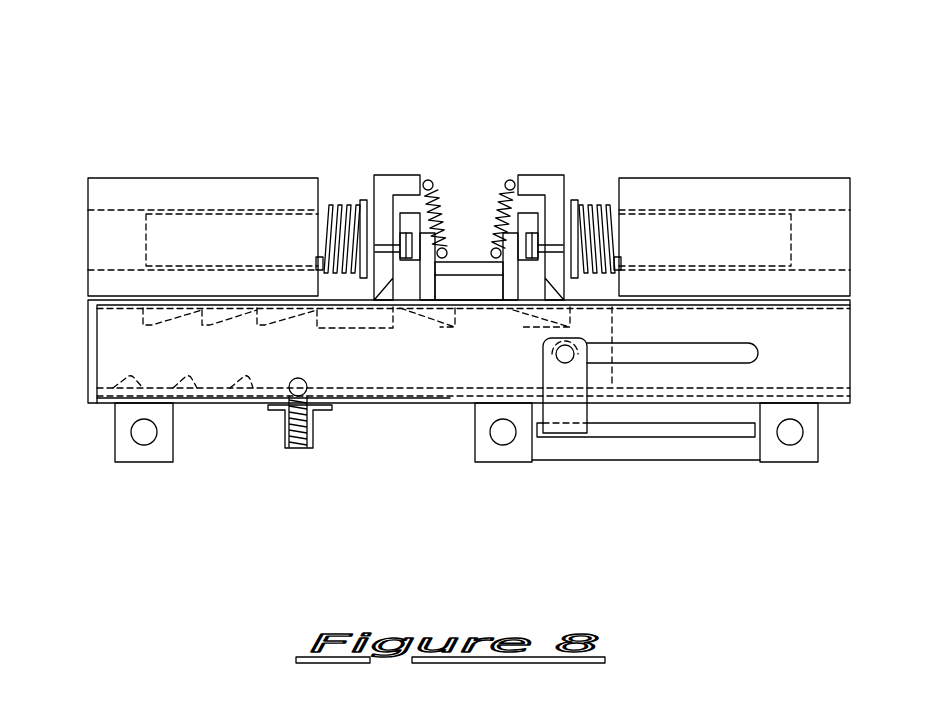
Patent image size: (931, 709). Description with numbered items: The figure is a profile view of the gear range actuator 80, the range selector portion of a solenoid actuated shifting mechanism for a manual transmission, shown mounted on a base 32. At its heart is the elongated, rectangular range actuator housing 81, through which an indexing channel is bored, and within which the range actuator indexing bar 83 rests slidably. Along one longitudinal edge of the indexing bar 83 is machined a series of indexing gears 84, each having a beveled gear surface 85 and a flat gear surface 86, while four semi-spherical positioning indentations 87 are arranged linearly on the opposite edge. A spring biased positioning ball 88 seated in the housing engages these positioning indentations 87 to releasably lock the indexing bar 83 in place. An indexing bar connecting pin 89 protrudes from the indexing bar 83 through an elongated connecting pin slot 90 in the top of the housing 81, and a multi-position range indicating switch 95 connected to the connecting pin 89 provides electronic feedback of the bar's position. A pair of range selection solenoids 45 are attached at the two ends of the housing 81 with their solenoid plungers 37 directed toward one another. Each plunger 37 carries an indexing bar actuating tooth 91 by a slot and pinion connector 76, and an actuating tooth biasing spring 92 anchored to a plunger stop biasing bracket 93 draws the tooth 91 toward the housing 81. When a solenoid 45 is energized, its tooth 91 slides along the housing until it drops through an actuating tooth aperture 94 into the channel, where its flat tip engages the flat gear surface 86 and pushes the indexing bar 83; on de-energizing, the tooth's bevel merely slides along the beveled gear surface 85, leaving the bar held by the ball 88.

The base frame 32 is at (88, 373).
The solenoid plunger 37 is at (347, 303).
The range selection solenoid 45 is at (208, 222).
The slot and pinion connector 76 is at (387, 248).
The gear range actuator 80 is at (143, 528).
The range actuator housing 81 is at (173, 398).
The range actuator indexing bar 83 is at (335, 380).
The indexing gears 84 is at (267, 316).
The beveled gear surface 85 is at (347, 305).
The flat gear surface 86 is at (317, 322).
The positioning indentations 87 is at (187, 380).
The spring biased positioning ball 88 is at (310, 388).
The indexing bar connecting pin 89 is at (570, 358).
The connecting pin slot 90 is at (678, 353).
The indexing bar actuating tooth 91 is at (410, 175).
The actuating tooth biasing spring 92 is at (436, 195).
The plunger stop biasing bracket 93 is at (467, 262).
The actuating tooth aperture 94 is at (320, 267).
The multi-position range indicating switch 95 is at (565, 432).